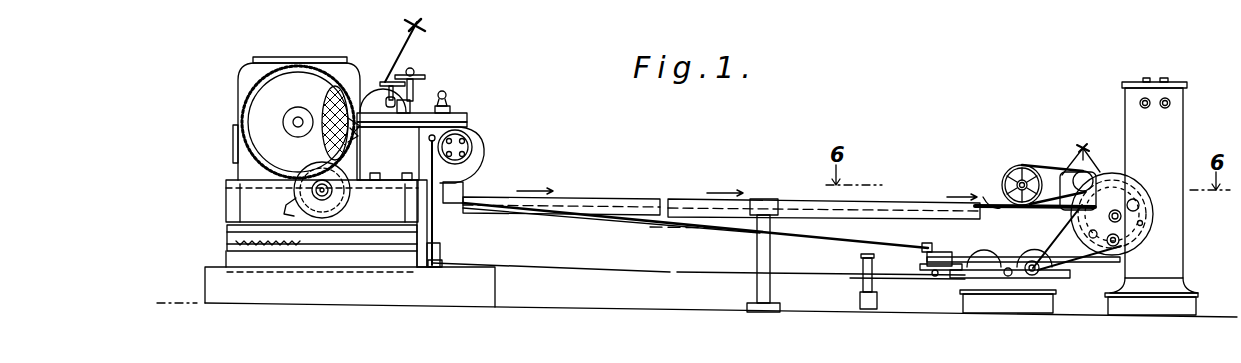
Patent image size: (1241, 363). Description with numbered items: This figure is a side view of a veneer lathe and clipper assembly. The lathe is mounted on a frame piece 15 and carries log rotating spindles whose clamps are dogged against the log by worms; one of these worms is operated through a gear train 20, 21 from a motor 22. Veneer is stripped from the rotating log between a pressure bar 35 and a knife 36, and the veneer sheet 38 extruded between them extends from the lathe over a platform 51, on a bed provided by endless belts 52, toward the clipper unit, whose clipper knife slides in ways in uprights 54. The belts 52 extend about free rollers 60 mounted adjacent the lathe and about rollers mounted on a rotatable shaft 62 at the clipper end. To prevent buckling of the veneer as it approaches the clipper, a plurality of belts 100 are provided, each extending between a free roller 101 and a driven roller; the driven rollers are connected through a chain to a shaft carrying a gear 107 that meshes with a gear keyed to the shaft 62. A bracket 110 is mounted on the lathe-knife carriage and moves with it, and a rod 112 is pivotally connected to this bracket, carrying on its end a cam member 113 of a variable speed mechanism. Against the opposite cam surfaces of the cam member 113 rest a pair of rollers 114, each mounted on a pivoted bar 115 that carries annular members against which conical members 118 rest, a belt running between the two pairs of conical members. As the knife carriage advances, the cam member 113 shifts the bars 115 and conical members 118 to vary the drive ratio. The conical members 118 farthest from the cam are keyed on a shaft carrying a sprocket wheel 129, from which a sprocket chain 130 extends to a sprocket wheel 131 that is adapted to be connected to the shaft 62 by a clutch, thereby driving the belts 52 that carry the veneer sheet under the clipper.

The frame piece 15 is at (222, 282).
The gear train 20 is at (248, 91).
The gear train 21 is at (352, 200).
The motor 22 is at (316, 162).
The pressure bar 35 is at (356, 122).
The knife 36 is at (332, 118).
The veneer sheet 38 is at (352, 132).
The platform 51 is at (602, 197).
The endless belts 52 is at (987, 198).
The uprights 54 is at (1173, 143).
The free rollers 60 is at (466, 185).
The rotatable shaft 62 is at (1120, 221).
The belts 100 is at (1036, 168).
The free roller 101 is at (1022, 165).
The gear 107 is at (1092, 163).
The bracket 110 is at (449, 186).
The rod 112 is at (748, 230).
The cam member 113 is at (936, 233).
The rollers 114 is at (922, 253).
The bar 115 is at (936, 278).
The conical member 118 is at (997, 236).
The sprocket wheel 129 is at (1030, 274).
The sprocket chain 130 is at (1092, 270).
The sprocket wheel 131 is at (1143, 227).